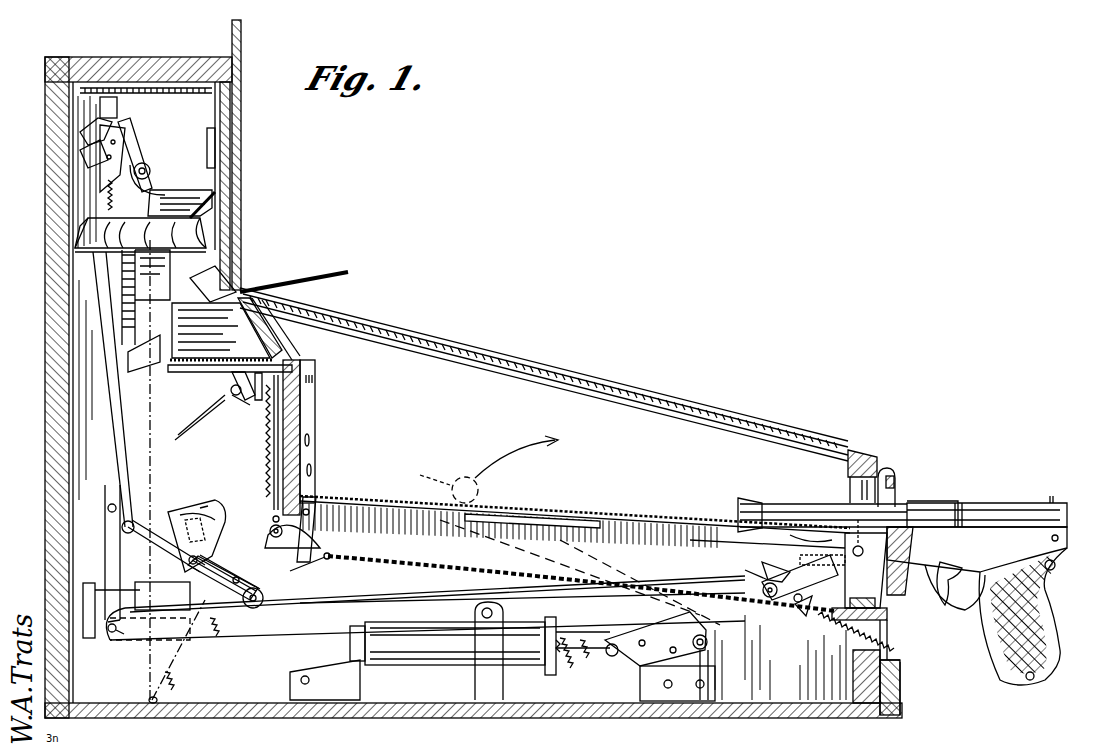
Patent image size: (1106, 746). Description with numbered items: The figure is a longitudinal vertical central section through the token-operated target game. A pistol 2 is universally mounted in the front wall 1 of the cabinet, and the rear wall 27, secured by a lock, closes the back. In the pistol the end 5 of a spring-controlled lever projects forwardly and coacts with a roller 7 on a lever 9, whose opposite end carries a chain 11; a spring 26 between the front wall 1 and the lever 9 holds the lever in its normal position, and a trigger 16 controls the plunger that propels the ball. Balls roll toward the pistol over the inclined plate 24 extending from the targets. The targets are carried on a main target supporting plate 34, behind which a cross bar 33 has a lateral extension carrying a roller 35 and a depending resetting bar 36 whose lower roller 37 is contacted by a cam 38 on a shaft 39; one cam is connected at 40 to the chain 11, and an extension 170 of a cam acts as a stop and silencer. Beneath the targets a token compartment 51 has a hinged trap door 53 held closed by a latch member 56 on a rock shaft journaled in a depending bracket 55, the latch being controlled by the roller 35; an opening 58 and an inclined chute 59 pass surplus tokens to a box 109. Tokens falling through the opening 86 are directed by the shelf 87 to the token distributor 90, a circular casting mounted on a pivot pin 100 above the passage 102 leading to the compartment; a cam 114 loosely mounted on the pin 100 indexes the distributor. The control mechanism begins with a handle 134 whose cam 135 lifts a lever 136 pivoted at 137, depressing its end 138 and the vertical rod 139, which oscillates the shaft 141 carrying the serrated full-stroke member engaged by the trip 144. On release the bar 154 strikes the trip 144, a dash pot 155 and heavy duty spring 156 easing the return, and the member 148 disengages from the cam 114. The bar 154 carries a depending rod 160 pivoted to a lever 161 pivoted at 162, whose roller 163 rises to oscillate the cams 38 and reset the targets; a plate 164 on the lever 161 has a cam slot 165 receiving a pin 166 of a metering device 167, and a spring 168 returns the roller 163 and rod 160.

The front wall 1 is at (888, 627).
The pistol 2 is at (980, 508).
The end of lever 5 is at (762, 566).
The roller 7 is at (762, 590).
The lever 9 is at (775, 602).
The chain 11 is at (755, 614).
The trigger 16 is at (940, 594).
The plate 24 is at (640, 513).
The spring 26 is at (816, 622).
The rear wall 27 is at (45, 302).
The cross bar 33 is at (262, 410).
The main target supporting plate 34 is at (300, 426).
The roller 35 is at (245, 398).
The resetting bar 36 is at (270, 442).
The roller 37 is at (272, 520).
The cam 38 is at (268, 538).
The shaft 39 is at (285, 536).
The connection 40 is at (330, 562).
The compartment 51 is at (252, 350).
The trap door 53 is at (195, 374).
The depending bracket 55 is at (194, 425).
The latch member 56 is at (236, 384).
The opening 58 is at (174, 312).
The chute 59 is at (152, 351).
The opening 86 is at (210, 166).
The shelf 87 is at (205, 200).
The token distributor 90 is at (205, 236).
The pivot pin 100 is at (170, 318).
The cylindrical passage 102 is at (220, 283).
The box 109 is at (152, 459).
The cam 114 is at (150, 182).
The handle 134 is at (457, 478).
The cam 135 is at (625, 634).
The lever 136 is at (312, 633).
The pivot 137 is at (495, 615).
The end of lever 138 is at (130, 640).
The vertical rod 139 is at (110, 546).
The shaft 141 is at (150, 158).
The trip 144 is at (93, 128).
The member 148 is at (95, 170).
The bar 154 is at (80, 148).
The dash pot 155 is at (505, 660).
The heavy duty spring 156 is at (528, 642).
The depending rod 160 is at (97, 280).
The lever 161 is at (226, 562).
The pivot 162 is at (215, 552).
The roller 163 is at (264, 598).
The plate 164 is at (180, 495).
The cam slot 165 is at (216, 502).
The pin 166 is at (192, 512).
The metering device 167 is at (204, 506).
The spring 168 is at (182, 672).
The extension 170 is at (312, 530).